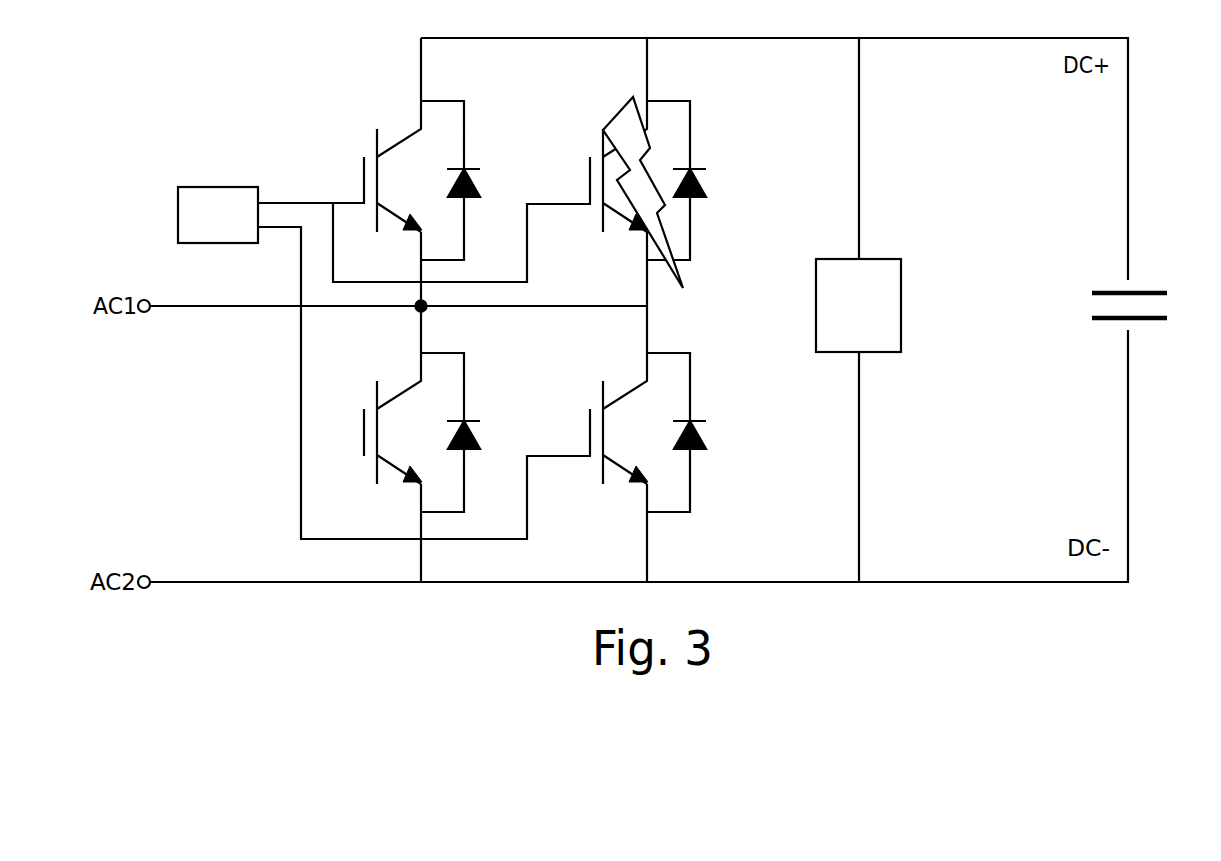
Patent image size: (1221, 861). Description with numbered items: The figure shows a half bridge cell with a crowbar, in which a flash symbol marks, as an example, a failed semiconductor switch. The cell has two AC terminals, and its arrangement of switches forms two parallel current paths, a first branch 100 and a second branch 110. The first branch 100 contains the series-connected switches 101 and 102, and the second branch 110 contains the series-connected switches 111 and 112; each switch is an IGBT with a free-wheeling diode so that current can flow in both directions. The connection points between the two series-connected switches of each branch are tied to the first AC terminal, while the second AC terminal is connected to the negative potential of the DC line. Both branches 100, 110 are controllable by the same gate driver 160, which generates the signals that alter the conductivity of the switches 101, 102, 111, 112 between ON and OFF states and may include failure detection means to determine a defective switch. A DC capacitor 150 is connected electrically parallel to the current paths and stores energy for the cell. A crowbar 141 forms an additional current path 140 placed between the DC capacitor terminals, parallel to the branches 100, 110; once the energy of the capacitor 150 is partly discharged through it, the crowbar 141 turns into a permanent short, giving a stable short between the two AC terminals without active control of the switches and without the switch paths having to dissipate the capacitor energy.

The parallel branch 100 is at (437, 293).
The switch 101 is at (436, 180).
The switch 102 is at (437, 432).
The parallel branch 110 is at (665, 293).
The switch 111 is at (662, 192).
The switch 112 is at (665, 432).
The current path 140 is at (879, 293).
The crowbar 141 is at (879, 294).
The DC capacitor 150 is at (1154, 292).
The gate driver 160 is at (384, 346).